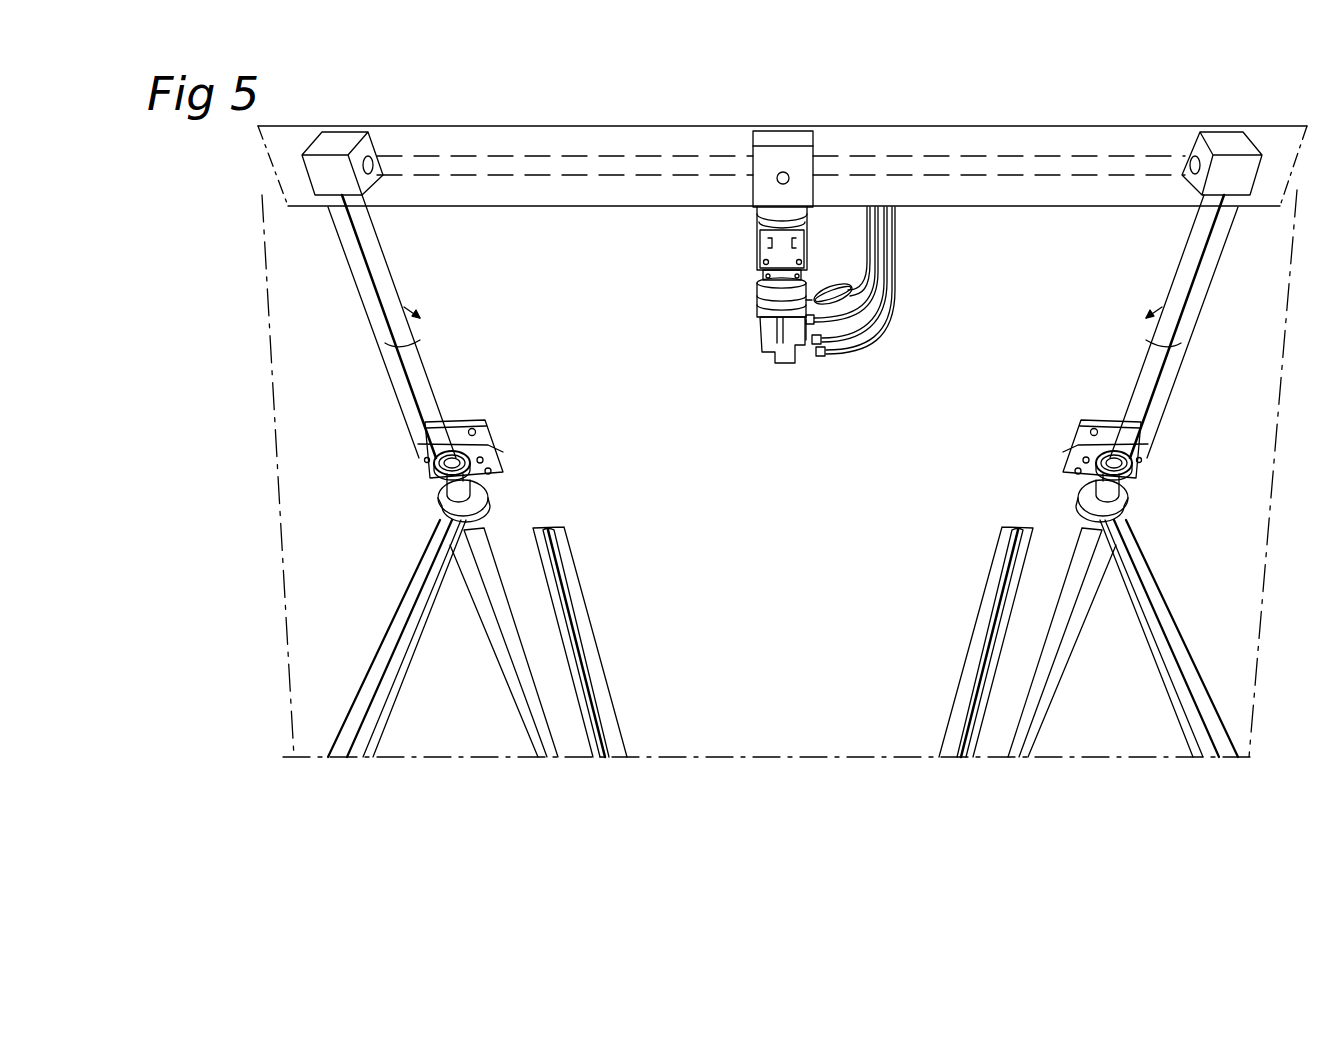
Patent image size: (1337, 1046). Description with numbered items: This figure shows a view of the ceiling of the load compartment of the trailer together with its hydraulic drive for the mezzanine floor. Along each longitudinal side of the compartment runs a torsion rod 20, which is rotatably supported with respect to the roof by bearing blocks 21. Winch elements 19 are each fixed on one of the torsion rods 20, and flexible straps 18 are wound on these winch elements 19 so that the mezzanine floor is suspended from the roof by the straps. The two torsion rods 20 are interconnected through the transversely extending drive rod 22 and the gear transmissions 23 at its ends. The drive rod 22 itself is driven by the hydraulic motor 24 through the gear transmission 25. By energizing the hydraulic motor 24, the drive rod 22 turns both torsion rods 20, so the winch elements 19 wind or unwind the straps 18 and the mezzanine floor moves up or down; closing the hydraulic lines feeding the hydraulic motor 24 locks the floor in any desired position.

The flexible straps 18 is at (395, 623).
The winch element 19 is at (445, 502).
The torsion rods 20 is at (418, 390).
The bearing blocks 21 is at (440, 481).
The drive rod 22 is at (588, 167).
The gear transmissions 23 is at (345, 143).
The hydraulic motor 24 is at (768, 325).
The gear transmission 25 is at (788, 141).